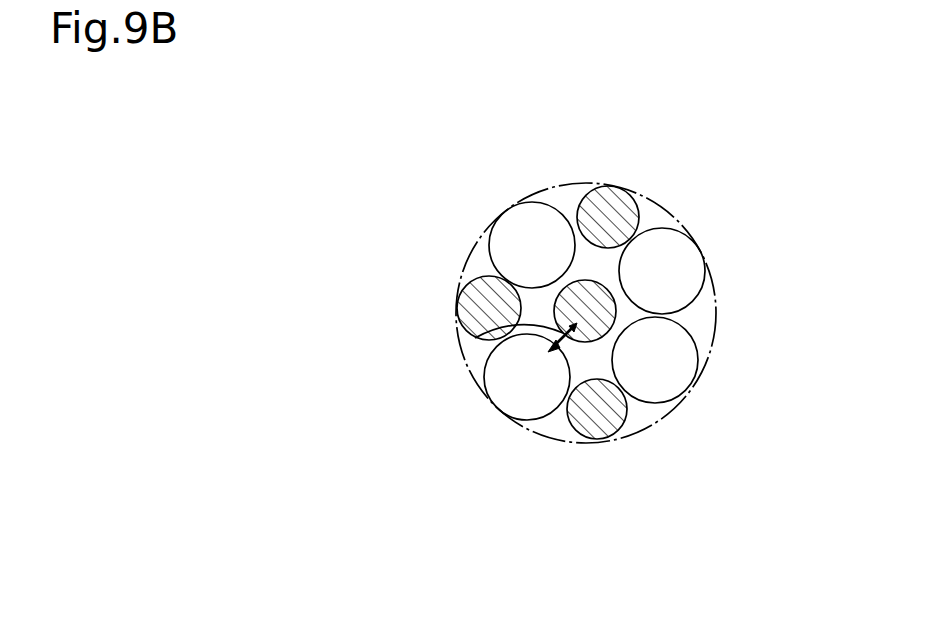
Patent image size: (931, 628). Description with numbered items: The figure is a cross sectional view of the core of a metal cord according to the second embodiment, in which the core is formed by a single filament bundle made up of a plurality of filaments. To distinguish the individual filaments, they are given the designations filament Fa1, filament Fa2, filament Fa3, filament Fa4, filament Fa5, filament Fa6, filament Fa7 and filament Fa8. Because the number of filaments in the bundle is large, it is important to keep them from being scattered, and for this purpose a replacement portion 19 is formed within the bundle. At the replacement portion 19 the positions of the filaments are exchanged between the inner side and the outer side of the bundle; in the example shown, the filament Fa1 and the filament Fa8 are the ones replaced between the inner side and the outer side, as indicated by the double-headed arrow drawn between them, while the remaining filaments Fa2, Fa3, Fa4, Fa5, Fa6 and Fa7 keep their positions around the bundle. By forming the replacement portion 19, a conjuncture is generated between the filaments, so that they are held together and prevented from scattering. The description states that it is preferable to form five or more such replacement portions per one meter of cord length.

The filament Fa1 is at (585, 342).
The filament Fa2 is at (473, 303).
The filament Fa3 is at (520, 232).
The filament Fa4 is at (612, 198).
The filament Fa5 is at (683, 255).
The filament Fa6 is at (678, 350).
The filament Fa7 is at (603, 427).
The filament Fa8 is at (508, 402).
The replacement portion 19 is at (483, 331).